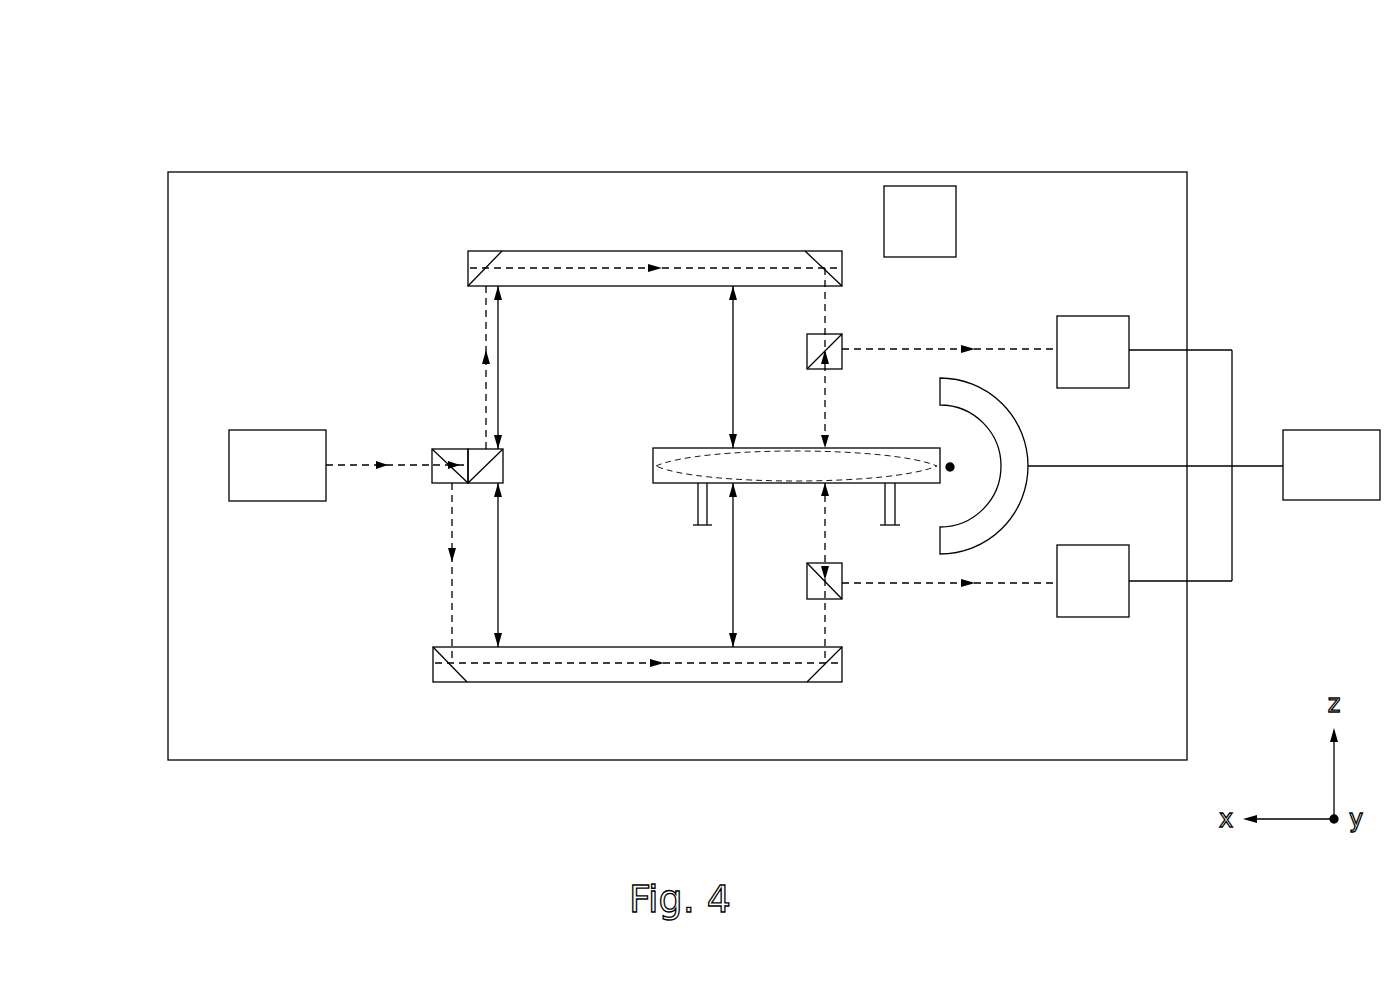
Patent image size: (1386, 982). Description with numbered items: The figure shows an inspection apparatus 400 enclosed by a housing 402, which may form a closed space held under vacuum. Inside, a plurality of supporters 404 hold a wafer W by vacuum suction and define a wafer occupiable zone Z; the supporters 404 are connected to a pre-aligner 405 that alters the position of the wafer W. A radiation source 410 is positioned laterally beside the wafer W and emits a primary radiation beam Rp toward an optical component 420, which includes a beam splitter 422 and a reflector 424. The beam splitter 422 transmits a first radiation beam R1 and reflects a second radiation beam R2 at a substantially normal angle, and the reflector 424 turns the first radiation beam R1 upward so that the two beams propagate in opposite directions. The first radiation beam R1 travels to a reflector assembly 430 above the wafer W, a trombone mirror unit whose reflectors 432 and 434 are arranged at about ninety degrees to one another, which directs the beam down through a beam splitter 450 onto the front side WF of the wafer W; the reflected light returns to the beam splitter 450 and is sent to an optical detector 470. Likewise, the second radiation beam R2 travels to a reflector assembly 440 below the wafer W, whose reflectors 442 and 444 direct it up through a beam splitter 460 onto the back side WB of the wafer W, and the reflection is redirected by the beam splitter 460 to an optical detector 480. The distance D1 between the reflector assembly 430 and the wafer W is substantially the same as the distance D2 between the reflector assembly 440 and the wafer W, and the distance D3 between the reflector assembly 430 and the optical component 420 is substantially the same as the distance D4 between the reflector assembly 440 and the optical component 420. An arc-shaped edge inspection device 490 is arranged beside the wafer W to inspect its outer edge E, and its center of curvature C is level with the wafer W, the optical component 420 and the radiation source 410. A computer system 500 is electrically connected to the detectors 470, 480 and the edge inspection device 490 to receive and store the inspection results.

The inspection apparatus 400 is at (152, 80).
The housing 402 is at (271, 172).
The supporters 404 is at (700, 510).
The pre-aligner 405 is at (920, 221).
The radiation source 410 is at (277, 465).
The optical component 420 is at (409, 543).
The beam splitter 422 is at (478, 483).
The reflector 424 is at (435, 471).
The reflector assembly 430 is at (655, 180).
The reflector 432 is at (495, 251).
The reflector 434 is at (782, 206).
The reflector assembly 440 is at (637, 754).
The reflector 442 is at (457, 682).
The reflector 444 is at (784, 730).
The beam splitter 450 is at (842, 341).
The beam splitter 460 is at (842, 590).
The optical detector 470 is at (1144, 352).
The optical detector 480 is at (1144, 483).
The edge inspection device 490 is at (1007, 423).
The computer system 500 is at (1331, 465).
The wafer W is at (796, 465).
The front side of the wafer WF is at (667, 450).
The back side of the wafer WB is at (667, 483).
The outer edge of the wafer E is at (950, 463).
The center of curvature C is at (950, 472).
The wafer occupiable zone Z is at (893, 450).
The primary radiation beam Rp is at (358, 458).
The first radiation beam R1 is at (486, 400).
The second radiation beam R2 is at (450, 613).
The distance D1 is at (733, 366).
The distance D2 is at (733, 578).
The distance D3 is at (499, 381).
The distance D4 is at (499, 548).